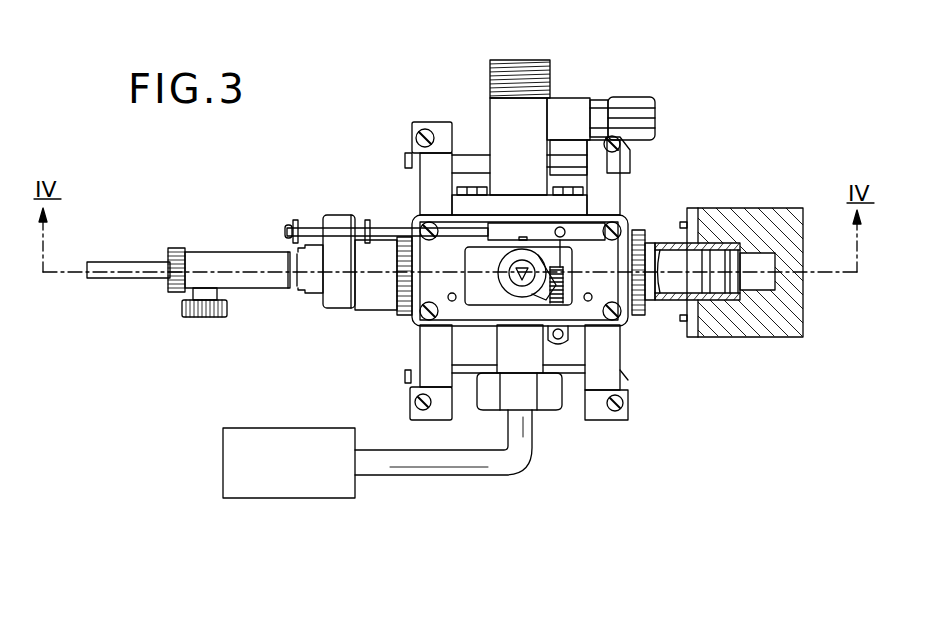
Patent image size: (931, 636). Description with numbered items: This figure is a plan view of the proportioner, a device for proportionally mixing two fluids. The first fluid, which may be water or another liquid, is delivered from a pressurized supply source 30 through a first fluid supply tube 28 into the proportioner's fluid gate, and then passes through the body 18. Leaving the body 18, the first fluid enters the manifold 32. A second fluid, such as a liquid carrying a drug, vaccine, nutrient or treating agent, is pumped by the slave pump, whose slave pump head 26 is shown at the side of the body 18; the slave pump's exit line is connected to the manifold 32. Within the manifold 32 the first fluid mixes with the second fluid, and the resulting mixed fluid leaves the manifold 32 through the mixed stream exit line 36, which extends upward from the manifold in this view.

The mixed stream exit line 36 is at (490, 72).
The manifold 32 is at (505, 128).
The body 18 is at (613, 258).
The slave pump head 26 is at (740, 337).
The first fluid supply tube 28 is at (450, 475).
The pressurized supply source 30 is at (268, 498).